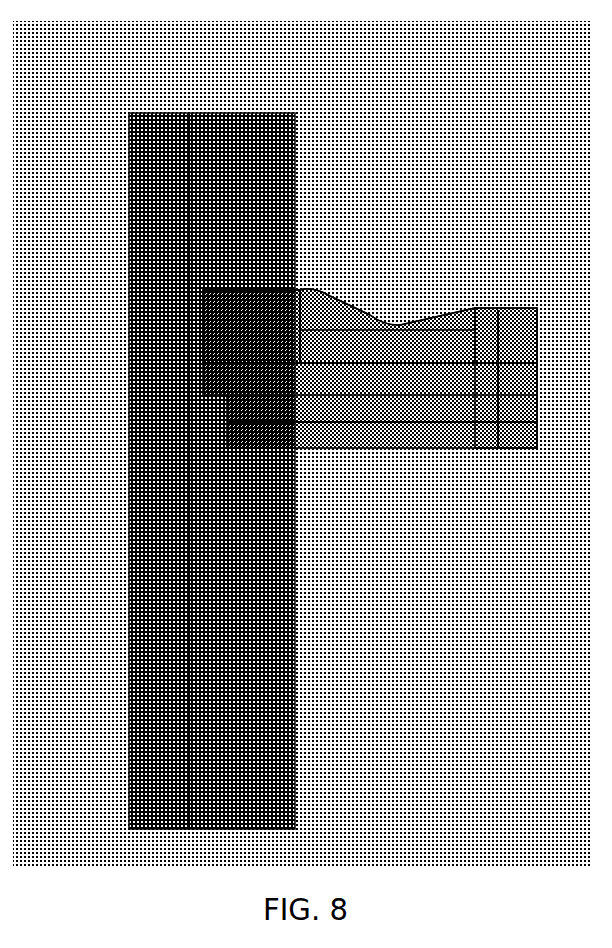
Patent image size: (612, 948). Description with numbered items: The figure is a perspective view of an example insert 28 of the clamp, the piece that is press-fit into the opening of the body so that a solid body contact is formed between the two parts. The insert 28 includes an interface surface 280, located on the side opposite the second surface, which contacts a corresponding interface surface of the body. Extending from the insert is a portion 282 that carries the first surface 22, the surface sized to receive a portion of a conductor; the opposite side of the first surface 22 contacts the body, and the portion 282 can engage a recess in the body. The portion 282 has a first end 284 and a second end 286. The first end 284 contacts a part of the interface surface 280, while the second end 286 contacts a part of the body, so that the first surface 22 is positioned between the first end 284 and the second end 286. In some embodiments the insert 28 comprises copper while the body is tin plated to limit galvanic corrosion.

The insert 28 is at (490, 113).
The interface surface 280 is at (250, 552).
The portion 282 is at (375, 425).
The first end 284 is at (285, 290).
The first surface 22 is at (413, 305).
The second end 286 is at (525, 313).